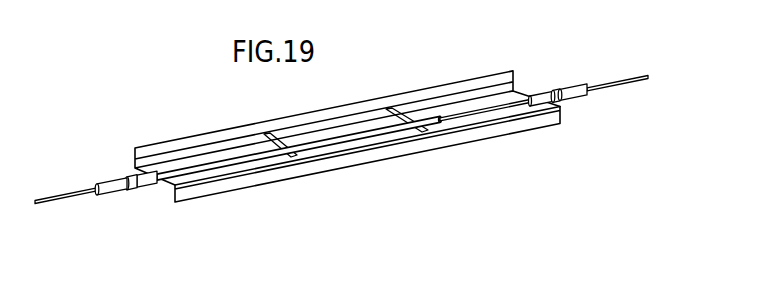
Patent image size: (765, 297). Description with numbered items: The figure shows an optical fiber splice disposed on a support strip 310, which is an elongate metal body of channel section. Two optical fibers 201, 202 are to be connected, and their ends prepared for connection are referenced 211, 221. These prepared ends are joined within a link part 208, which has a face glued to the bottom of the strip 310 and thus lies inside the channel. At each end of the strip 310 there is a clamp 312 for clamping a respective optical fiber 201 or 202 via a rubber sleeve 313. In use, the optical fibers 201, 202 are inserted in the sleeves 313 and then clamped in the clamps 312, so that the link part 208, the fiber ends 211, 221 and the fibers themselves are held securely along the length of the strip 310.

The optical fiber 201 is at (58, 205).
The optical fiber 202 is at (639, 82).
The link part 208 is at (366, 121).
The prepared end of optical fiber 211 is at (257, 155).
The prepared end of optical fiber 221 is at (425, 117).
The strip 310 is at (372, 152).
The clamp 312 is at (140, 193).
The rubber sleeve 313 is at (115, 192).